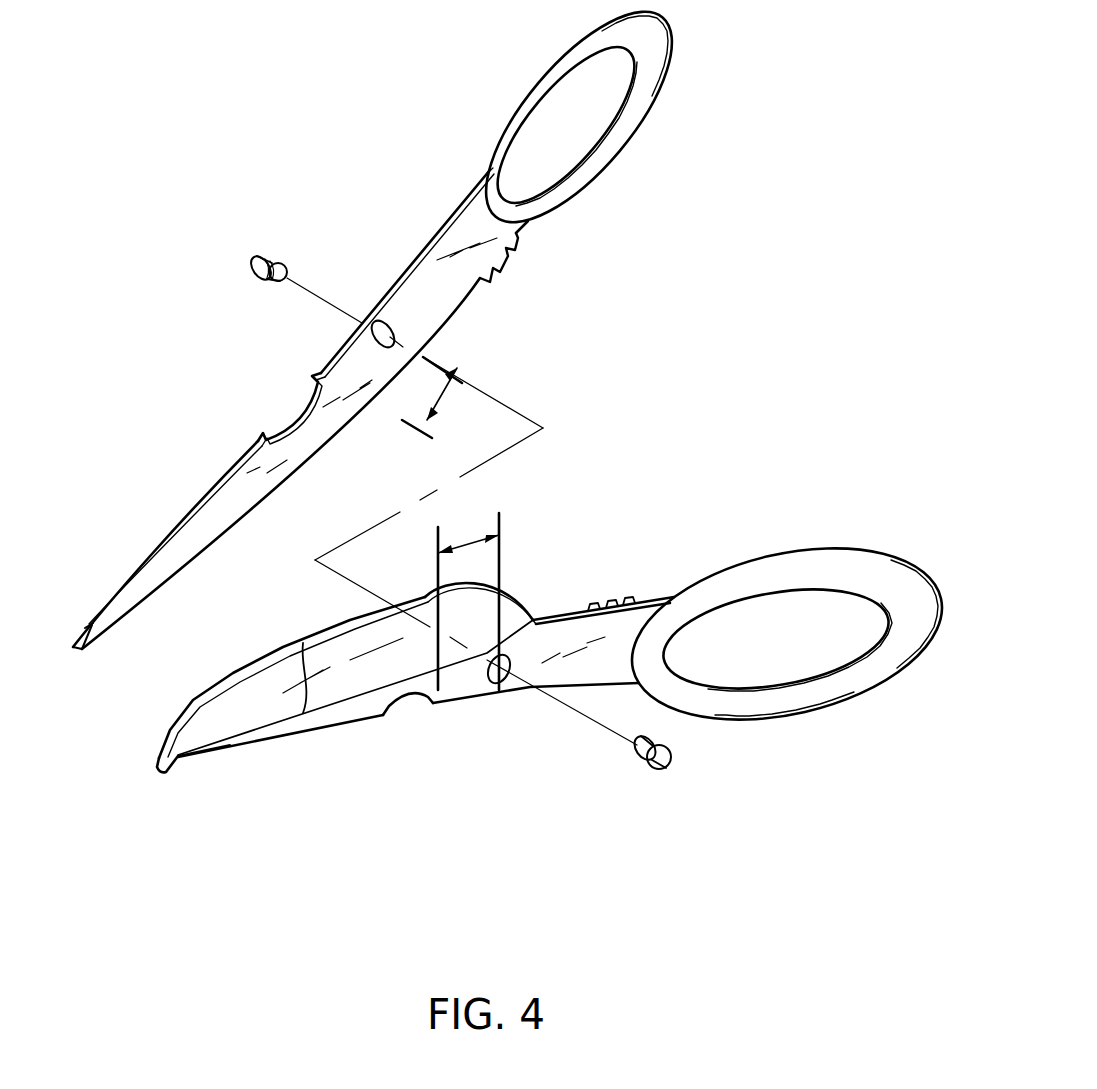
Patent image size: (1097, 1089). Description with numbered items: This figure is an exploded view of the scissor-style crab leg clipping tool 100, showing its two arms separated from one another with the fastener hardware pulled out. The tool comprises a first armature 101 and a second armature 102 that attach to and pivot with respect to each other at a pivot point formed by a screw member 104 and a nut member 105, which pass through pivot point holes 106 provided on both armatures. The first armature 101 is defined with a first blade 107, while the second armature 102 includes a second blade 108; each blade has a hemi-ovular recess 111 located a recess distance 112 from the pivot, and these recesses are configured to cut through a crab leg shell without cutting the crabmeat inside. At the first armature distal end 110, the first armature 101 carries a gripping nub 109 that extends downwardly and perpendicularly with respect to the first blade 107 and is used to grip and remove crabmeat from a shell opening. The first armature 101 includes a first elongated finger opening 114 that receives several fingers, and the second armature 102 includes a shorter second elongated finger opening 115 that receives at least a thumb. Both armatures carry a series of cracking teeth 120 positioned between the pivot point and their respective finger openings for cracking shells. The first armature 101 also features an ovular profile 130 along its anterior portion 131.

The scissor-style crab leg clipping tool 100 is at (300, 97).
The first armature 101 is at (458, 693).
The second armature 102 is at (343, 380).
The screw member 104 is at (265, 257).
The nut member 105 is at (670, 763).
The pivot point holes 106 is at (382, 328).
The first blade 107 is at (287, 733).
The second blade 108 is at (155, 550).
The gripping nub 109 is at (167, 775).
The first armature distal end 110 is at (178, 759).
The hemi-ovular recess 111 is at (283, 433).
The recess distance 112 is at (457, 368).
The first elongated finger opening 114 is at (777, 590).
The second elongated finger opening 115 is at (587, 152).
The cracking teeth 120 is at (541, 245).
The ovular profile 130 is at (233, 672).
The anterior portion 131 is at (302, 645).